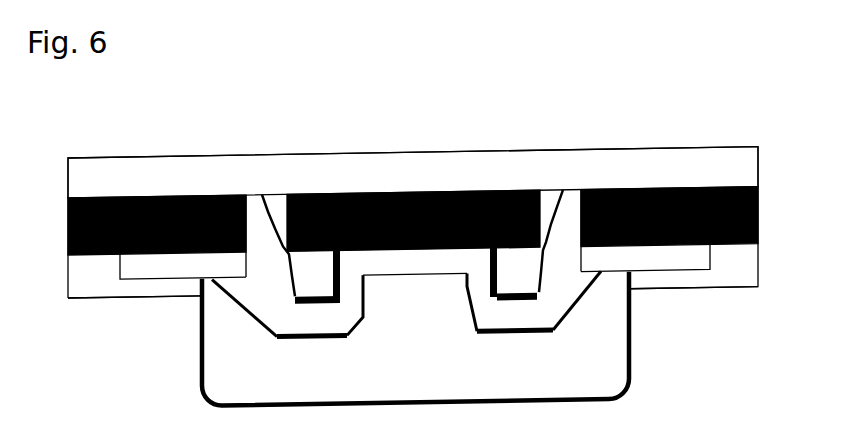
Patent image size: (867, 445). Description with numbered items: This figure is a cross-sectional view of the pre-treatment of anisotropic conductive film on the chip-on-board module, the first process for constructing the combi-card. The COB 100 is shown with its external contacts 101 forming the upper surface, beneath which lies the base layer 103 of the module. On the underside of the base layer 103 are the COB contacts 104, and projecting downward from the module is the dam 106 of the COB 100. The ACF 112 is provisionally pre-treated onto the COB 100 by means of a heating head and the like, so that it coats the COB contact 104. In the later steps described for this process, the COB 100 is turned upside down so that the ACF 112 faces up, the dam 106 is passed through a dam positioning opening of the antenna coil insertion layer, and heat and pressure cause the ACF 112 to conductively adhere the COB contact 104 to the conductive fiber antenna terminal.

The COB (Chip On Board) 100 is at (272, 146).
The external contacts of the COB 101 is at (734, 168).
The base layer of the COB 103 is at (760, 219).
The COB contact 104 is at (706, 261).
The ACF 112 is at (723, 284).
The dam of the COB 106 is at (614, 358).